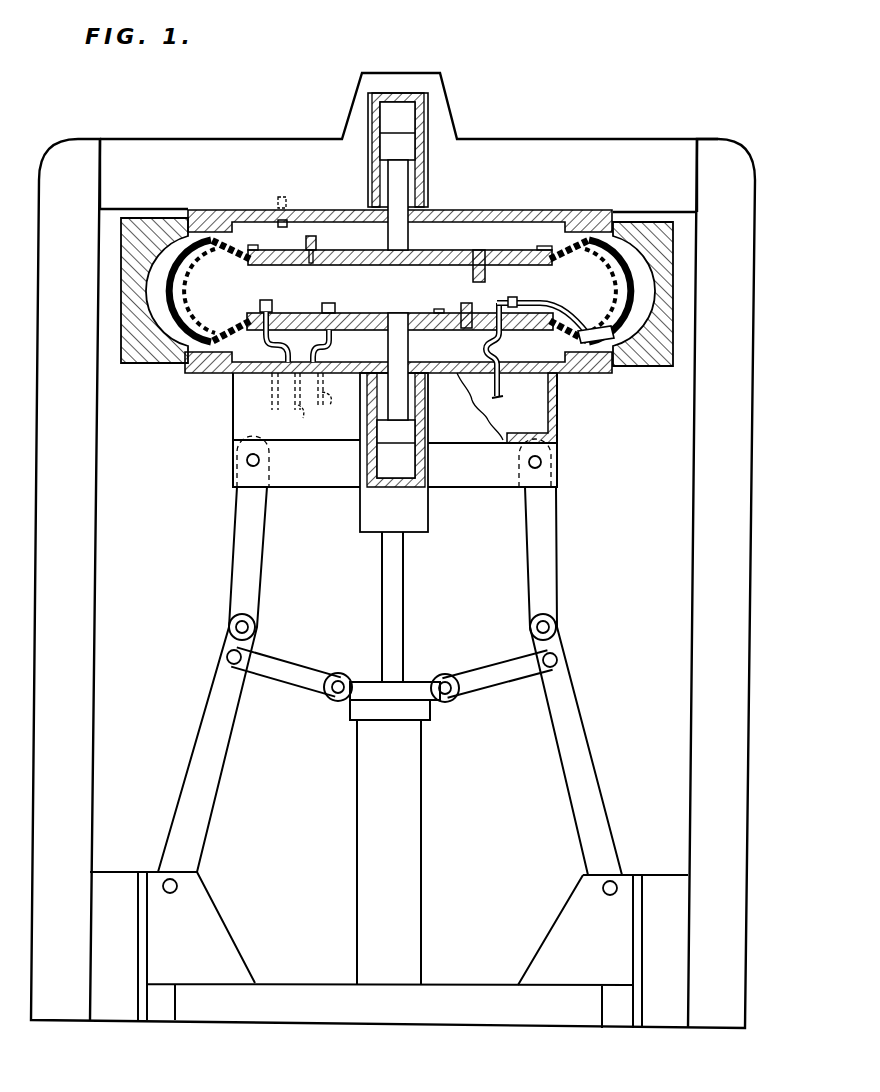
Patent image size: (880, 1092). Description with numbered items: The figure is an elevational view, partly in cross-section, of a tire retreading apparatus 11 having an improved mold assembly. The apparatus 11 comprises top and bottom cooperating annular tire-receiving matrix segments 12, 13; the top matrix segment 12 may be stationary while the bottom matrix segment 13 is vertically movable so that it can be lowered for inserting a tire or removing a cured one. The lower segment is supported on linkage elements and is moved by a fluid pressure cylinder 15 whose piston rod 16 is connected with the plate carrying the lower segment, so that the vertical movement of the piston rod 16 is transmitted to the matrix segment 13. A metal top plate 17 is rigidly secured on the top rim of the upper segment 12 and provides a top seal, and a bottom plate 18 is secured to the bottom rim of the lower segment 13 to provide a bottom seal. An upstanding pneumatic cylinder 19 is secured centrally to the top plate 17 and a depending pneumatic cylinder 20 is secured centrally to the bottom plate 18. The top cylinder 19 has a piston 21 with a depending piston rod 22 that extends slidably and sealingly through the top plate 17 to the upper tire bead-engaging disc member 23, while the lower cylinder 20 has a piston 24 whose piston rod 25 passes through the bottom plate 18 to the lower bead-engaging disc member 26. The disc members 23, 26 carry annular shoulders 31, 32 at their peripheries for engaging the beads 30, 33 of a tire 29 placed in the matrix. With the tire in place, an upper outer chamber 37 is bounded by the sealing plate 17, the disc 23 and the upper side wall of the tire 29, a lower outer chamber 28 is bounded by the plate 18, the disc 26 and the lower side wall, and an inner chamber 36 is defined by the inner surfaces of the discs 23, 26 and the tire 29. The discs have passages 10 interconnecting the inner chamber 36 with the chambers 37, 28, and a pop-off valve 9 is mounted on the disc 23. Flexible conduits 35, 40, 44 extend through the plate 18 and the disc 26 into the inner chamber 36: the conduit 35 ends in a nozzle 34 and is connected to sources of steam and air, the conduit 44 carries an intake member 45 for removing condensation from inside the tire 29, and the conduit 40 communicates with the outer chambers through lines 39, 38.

The pop-off valve 9 is at (327, 218).
The passages 10 is at (493, 252).
The tire retreading apparatus 11 is at (679, 121).
The top matrix segment 12 is at (673, 240).
The bottom matrix segment 13 is at (673, 353).
The fluid pressure cylinder 15 is at (413, 843).
The piston rod 16 is at (397, 633).
The top plate 17 is at (492, 208).
The bottom plate 18 is at (188, 373).
The upstanding pneumatic cylinder 19 is at (423, 157).
The depending pneumatic cylinder 20 is at (416, 432).
The piston 21 is at (407, 147).
The depending piston rod 22 is at (406, 233).
The upper tire bead-engaging disc member 23 is at (476, 250).
The piston 24 is at (393, 445).
The piston rod 25 is at (410, 347).
The lower tire bead-engaging disc member 26 is at (437, 313).
The lower outer chamber 28 is at (378, 313).
The tire 29 is at (167, 270).
The tire bead 30 is at (255, 313).
The annular shoulder 31 is at (549, 300).
The annular shoulder 32 is at (262, 247).
The tire bead 33 is at (538, 268).
The nozzle 34 is at (273, 301).
The flexible conduit 35 is at (272, 340).
The inner chamber 36 is at (335, 282).
The upper outer chamber 37 is at (292, 228).
The line 38 is at (300, 426).
The line 39 is at (338, 398).
The flexible conduit 40 is at (340, 340).
The flexible conduit 44 is at (497, 348).
The intake member 45 is at (583, 324).